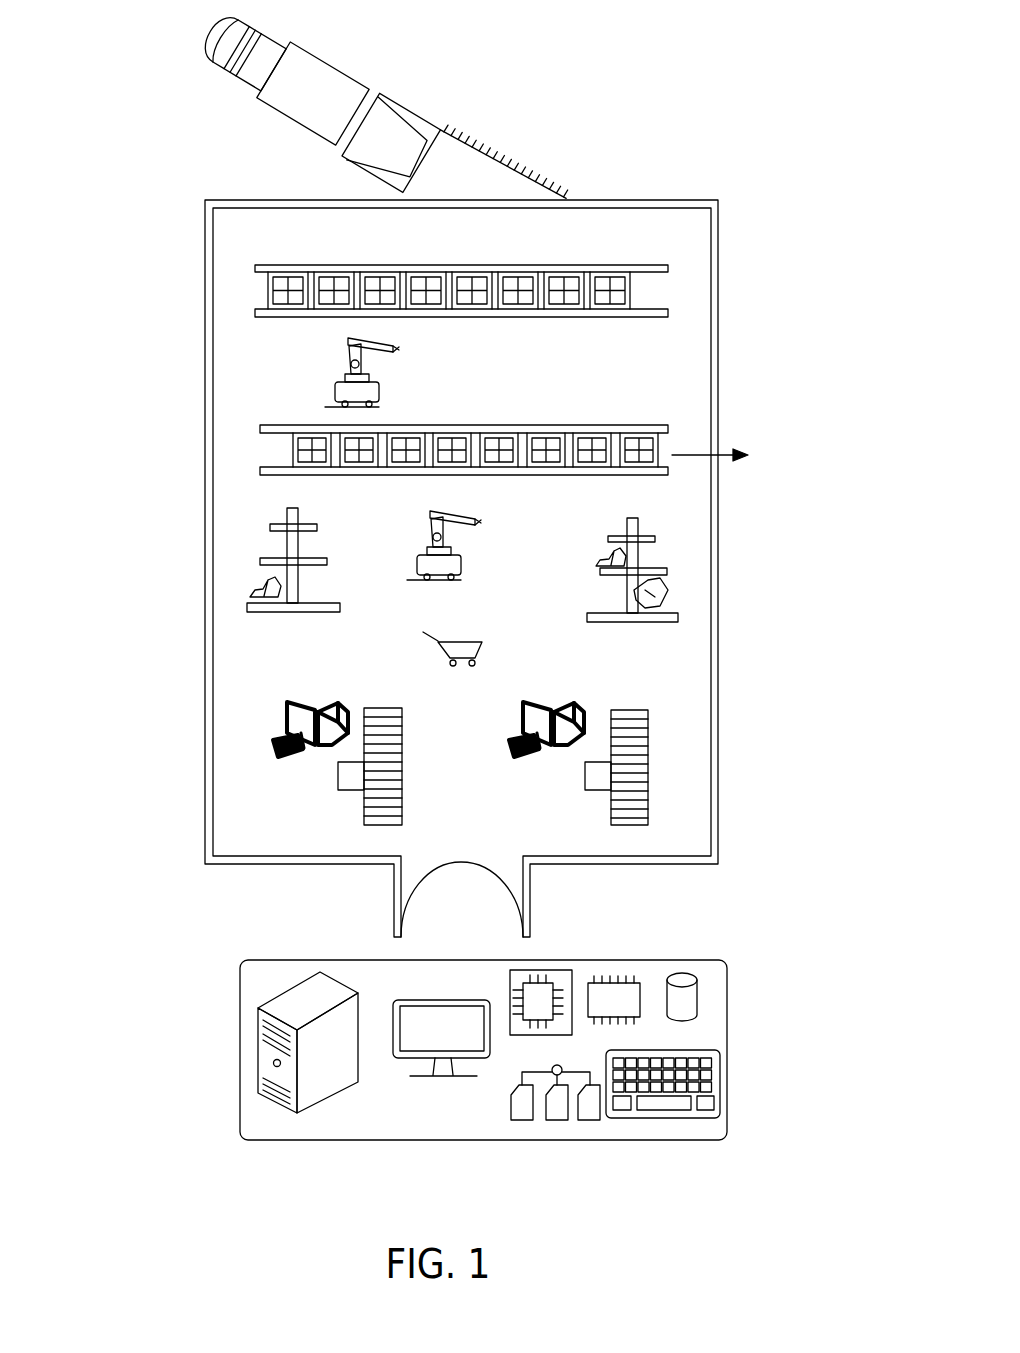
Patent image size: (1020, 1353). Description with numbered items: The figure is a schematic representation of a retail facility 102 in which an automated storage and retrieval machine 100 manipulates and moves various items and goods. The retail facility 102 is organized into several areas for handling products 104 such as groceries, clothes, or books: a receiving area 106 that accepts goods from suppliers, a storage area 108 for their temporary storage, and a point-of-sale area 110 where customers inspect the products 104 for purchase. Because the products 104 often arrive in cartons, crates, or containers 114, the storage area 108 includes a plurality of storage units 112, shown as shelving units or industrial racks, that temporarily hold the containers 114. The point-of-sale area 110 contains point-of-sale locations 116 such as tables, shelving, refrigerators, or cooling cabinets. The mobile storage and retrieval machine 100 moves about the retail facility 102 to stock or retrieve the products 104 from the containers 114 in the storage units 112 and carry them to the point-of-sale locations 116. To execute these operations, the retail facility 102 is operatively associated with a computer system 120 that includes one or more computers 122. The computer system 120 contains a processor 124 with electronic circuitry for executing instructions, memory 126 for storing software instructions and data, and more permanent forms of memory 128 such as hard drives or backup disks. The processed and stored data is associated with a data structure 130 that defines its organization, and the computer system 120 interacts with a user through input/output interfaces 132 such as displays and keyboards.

The automated storage and retrieval machine 100 is at (372, 378).
The retail facility 102 is at (160, 155).
The products 104 is at (254, 586).
The receiving area 106 is at (466, 148).
The storage area 108 is at (500, 356).
The point-of-sale area 110 is at (445, 790).
The storage units 112 is at (637, 316).
The containers 114 is at (292, 271).
The point-of-sale locations 116 is at (300, 521).
The computer system 120 is at (240, 986).
The computer 122 is at (265, 1063).
The processor 124 is at (540, 968).
The memory 126 is at (613, 982).
The permanent memory 128 is at (682, 970).
The data structure 130 is at (522, 1122).
The input/output interfaces 132 is at (412, 1077).